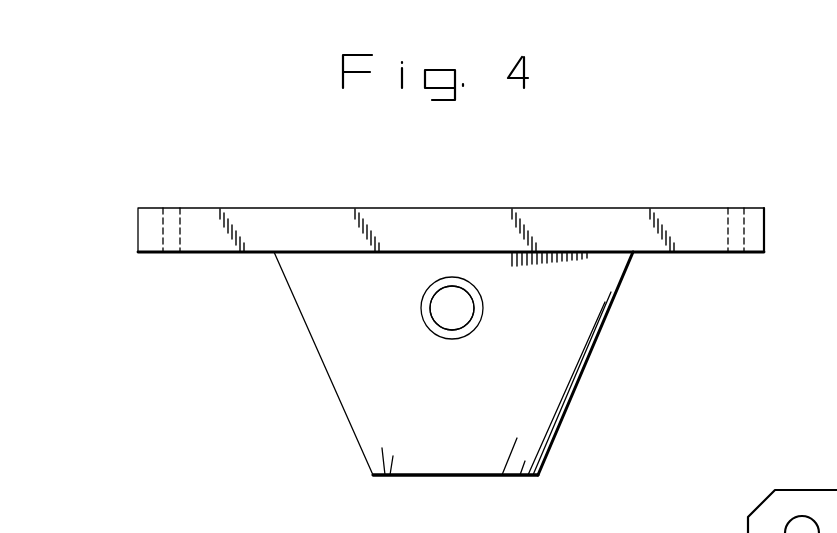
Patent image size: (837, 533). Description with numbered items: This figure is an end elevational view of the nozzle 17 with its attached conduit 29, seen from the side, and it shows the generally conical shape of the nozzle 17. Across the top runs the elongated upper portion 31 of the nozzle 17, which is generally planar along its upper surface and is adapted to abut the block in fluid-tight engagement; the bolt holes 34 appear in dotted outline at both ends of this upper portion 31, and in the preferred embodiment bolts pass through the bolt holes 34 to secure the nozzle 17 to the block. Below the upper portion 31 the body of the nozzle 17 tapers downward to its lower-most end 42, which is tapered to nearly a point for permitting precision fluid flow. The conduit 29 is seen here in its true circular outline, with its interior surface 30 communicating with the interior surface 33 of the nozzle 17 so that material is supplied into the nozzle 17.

The nozzle 17 is at (327, 370).
The conduit 29 is at (430, 290).
The interior surface of the conduit 30 is at (465, 306).
The elongated upper portion 31 is at (318, 208).
The interior surface of the nozzle 33 is at (456, 314).
The bolt holes 34 is at (180, 228).
The lower-most end 42 is at (420, 477).